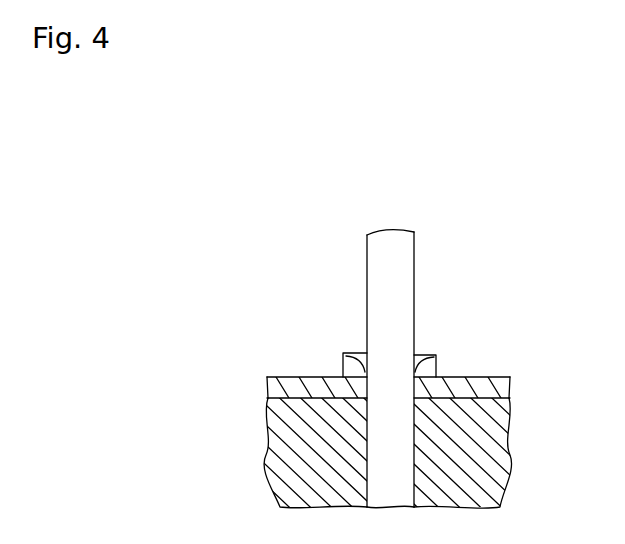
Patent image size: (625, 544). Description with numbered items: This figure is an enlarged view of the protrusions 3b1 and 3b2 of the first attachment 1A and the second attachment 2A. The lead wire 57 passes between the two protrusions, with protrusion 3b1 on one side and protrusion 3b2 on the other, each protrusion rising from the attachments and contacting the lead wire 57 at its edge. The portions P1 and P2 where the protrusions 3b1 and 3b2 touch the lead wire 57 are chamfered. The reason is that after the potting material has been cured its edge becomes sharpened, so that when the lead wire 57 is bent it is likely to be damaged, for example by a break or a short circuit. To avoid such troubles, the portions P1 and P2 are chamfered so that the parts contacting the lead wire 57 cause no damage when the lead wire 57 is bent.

The lead wire 57 is at (378, 270).
The portion P1 is at (364, 352).
The portion P2 is at (415, 353).
The protrusion 3b1 is at (343, 353).
The protrusion 3b2 is at (436, 357).
The second attachment 2A is at (297, 378).
The first attachment 1A is at (457, 390).